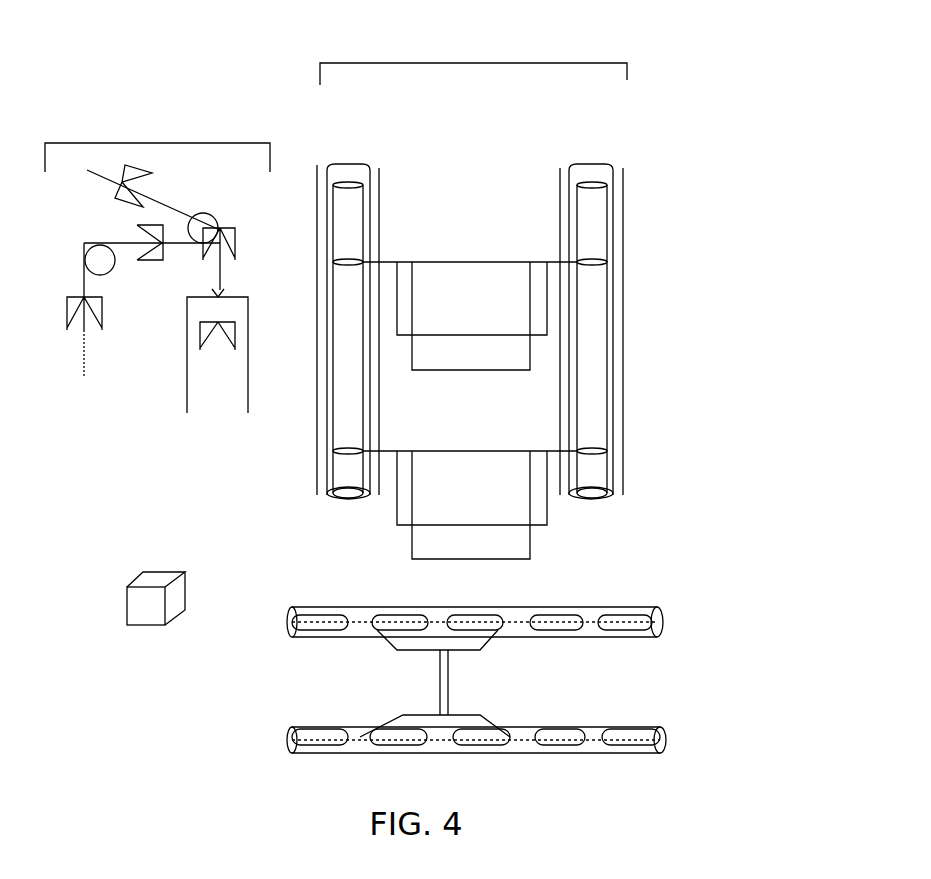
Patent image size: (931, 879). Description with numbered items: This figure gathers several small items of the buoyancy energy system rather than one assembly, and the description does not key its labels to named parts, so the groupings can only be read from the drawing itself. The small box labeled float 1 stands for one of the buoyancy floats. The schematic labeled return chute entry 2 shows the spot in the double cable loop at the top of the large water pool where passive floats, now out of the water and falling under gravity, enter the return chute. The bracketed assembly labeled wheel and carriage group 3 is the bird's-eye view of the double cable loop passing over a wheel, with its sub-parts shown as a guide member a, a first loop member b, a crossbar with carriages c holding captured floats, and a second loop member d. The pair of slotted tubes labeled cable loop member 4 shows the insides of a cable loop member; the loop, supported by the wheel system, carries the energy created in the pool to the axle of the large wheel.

The control unit 1 is at (162, 552).
The fluid supply schematic 2 is at (160, 143).
The cylinder assembly 3 is at (475, 63).
The slotted tube manifold 4 is at (660, 622).
The guide rail a is at (317, 165).
The left cylinder b is at (350, 164).
The carriage c is at (465, 262).
The right cylinder d is at (592, 183).